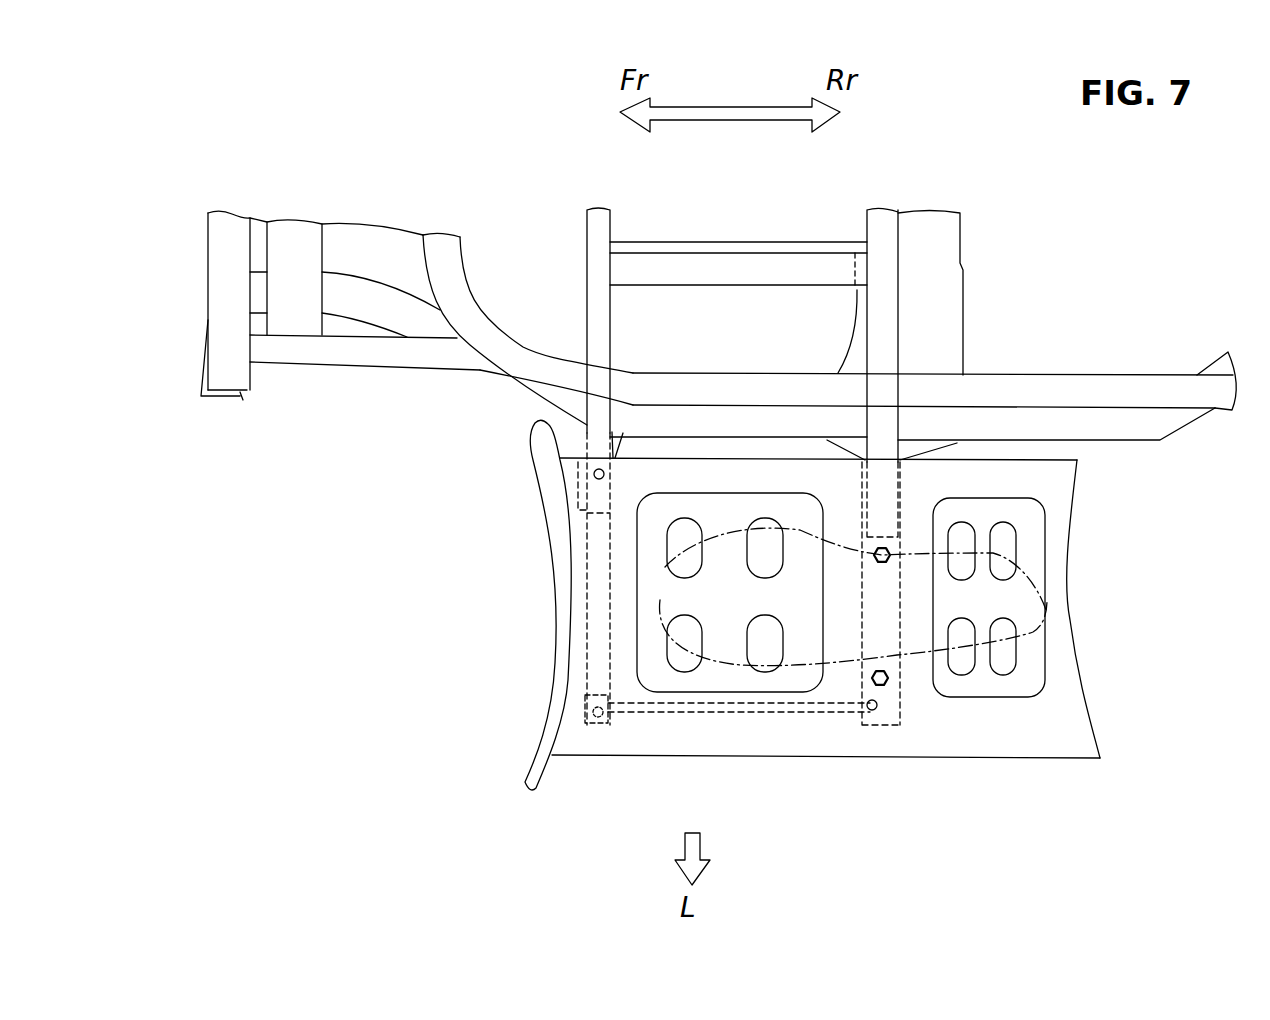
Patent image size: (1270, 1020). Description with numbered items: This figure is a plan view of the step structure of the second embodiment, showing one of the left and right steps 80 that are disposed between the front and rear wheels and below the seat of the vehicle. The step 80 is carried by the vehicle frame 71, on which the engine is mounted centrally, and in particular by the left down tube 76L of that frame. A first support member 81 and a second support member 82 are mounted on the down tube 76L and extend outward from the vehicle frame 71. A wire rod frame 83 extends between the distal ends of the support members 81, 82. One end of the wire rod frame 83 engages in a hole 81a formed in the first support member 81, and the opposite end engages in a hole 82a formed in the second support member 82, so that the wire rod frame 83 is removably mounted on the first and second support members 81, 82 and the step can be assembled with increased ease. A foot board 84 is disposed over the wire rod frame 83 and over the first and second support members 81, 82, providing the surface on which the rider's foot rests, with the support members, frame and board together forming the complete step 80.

The vehicle frame 71 is at (397, 148).
The left down tube 76L is at (1053, 375).
The step 80 is at (660, 633).
The first support member 81 is at (885, 723).
The hole 81a is at (875, 700).
The second support member 82 is at (582, 580).
The hole 82a is at (592, 723).
The wire rod frame 83 is at (782, 713).
The foot board 84 is at (1100, 710).